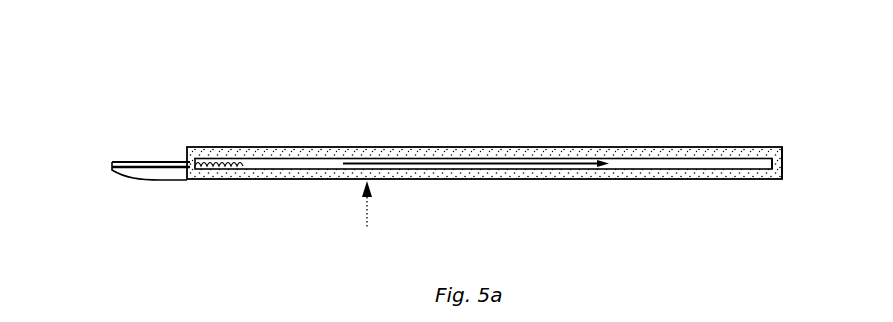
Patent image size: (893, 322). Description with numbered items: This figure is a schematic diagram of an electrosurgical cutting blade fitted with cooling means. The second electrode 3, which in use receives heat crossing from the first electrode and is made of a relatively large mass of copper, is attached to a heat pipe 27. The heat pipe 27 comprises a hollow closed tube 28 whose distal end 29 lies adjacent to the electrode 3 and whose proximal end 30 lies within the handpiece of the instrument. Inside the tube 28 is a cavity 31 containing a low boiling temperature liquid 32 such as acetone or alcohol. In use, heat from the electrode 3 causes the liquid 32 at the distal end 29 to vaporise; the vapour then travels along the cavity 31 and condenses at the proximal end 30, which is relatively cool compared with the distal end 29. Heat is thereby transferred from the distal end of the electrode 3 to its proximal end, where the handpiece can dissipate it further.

The second electrode 3 is at (131, 181).
The heat pipe 27 is at (498, 128).
The hollow closed tube 28 is at (363, 217).
The distal end 29 is at (188, 192).
The proximal end 30 is at (768, 185).
The cavity 31 is at (655, 180).
The low boiling temperature liquid 32 is at (238, 182).